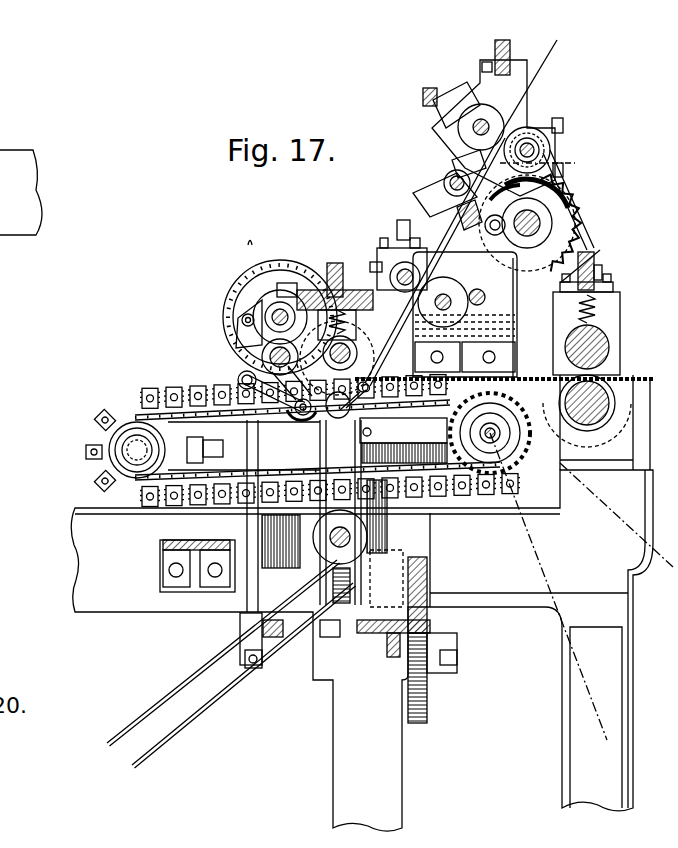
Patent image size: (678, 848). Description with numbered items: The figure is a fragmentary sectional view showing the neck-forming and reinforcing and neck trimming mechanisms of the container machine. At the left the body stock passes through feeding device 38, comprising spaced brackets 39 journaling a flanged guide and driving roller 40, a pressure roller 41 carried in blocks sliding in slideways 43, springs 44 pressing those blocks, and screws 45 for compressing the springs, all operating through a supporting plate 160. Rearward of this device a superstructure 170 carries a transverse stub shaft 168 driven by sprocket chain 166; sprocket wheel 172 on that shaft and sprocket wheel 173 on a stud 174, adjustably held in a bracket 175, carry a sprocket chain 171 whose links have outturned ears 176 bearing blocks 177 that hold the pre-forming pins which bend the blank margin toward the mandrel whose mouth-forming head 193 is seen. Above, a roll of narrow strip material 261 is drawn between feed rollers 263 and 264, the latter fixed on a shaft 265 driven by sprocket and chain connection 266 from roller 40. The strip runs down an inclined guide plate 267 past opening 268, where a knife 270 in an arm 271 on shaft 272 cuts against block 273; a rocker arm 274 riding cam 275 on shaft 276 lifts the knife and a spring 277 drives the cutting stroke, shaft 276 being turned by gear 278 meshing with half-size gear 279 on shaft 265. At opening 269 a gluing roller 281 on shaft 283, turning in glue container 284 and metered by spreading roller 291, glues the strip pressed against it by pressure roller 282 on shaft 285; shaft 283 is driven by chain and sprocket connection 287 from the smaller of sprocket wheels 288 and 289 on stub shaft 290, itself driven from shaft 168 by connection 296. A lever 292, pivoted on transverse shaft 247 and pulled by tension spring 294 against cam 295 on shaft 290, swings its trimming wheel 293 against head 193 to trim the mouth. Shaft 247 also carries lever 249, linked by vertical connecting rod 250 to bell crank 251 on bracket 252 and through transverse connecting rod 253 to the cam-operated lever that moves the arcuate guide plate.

The narrow strip material 261 is at (541, 63).
The feed roller 263 is at (497, 110).
The feed roller 264 is at (566, 124).
The shaft 265 is at (543, 150).
The half-size gear 279 is at (575, 163).
The spring 277 is at (560, 188).
The gear 278 is at (563, 193).
The superstructure 170 is at (565, 205).
The shaft 276 is at (560, 219).
The sprocket and chain connection 266 is at (598, 244).
The feeding device 38 is at (602, 243).
The screws 45 is at (602, 272).
The springs 44 is at (595, 297).
The slideways 43 is at (607, 313).
The brackets 39 is at (618, 330).
The pressure roller 41 is at (617, 347).
The flanged guide and driving roller 40 is at (623, 370).
The supporting plate 160 is at (647, 385).
The inclined guide plate 267 is at (479, 238).
The block 273 is at (519, 227).
The opening 269 is at (465, 295).
The spreading roller 291 is at (514, 288).
The glue container 284 is at (513, 312).
The transverse shaft 283 is at (513, 330).
The gluing roller 281 is at (515, 350).
The cam 275 is at (470, 160).
The rocker arm 274 is at (460, 172).
The shaft 272 is at (446, 180).
The arm 271 is at (450, 188).
The knife 270 is at (430, 205).
The opening 268 is at (408, 235).
The tension spring 294 is at (247, 273).
The transverse stub shaft 290 is at (242, 287).
The sprocket wheel 289 is at (267, 280).
The sprocket wheel 288 is at (287, 287).
The chain and sprocket connection 287 is at (327, 280).
The pressure roller 282 is at (380, 263).
The transverse shaft 285 is at (393, 277).
The sprocket and chain connection 296 is at (237, 287).
The cam 295 is at (270, 310).
The lever 292 is at (238, 332).
The transverse shaft 247 is at (262, 353).
The blocks 177 is at (158, 385).
The outturned ears 176 is at (198, 392).
The trimming wheel 293 is at (245, 385).
The sprocket chain 171 is at (100, 418).
The stud 174 is at (127, 447).
The sprocket wheel 173 is at (87, 453).
The bracket 175 is at (100, 476).
The lever 249 is at (320, 425).
The vertical connecting rod 250 is at (250, 457).
The mouth-forming head 193 is at (372, 432).
The transverse stub shaft 168 is at (485, 433).
The sprocket wheel 172 is at (515, 465).
The sprocket chain 166 is at (526, 560).
The bell crank 251 is at (240, 618).
The transverse connecting rod 253 is at (253, 668).
The bracket 252 is at (277, 638).